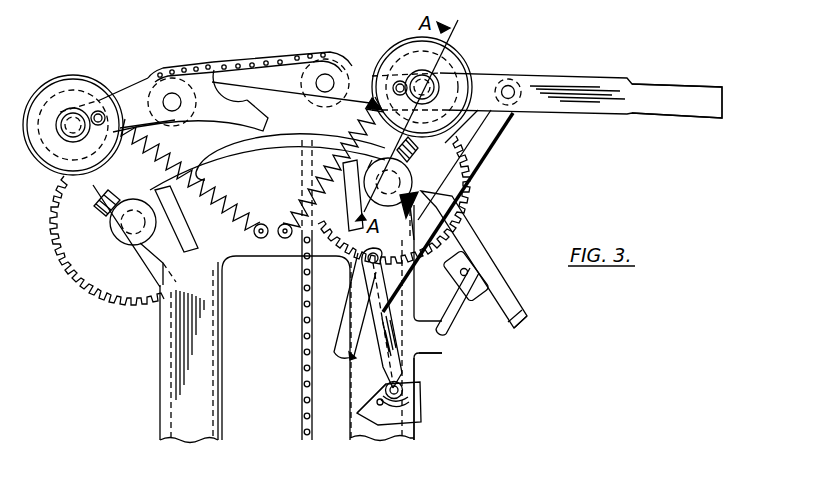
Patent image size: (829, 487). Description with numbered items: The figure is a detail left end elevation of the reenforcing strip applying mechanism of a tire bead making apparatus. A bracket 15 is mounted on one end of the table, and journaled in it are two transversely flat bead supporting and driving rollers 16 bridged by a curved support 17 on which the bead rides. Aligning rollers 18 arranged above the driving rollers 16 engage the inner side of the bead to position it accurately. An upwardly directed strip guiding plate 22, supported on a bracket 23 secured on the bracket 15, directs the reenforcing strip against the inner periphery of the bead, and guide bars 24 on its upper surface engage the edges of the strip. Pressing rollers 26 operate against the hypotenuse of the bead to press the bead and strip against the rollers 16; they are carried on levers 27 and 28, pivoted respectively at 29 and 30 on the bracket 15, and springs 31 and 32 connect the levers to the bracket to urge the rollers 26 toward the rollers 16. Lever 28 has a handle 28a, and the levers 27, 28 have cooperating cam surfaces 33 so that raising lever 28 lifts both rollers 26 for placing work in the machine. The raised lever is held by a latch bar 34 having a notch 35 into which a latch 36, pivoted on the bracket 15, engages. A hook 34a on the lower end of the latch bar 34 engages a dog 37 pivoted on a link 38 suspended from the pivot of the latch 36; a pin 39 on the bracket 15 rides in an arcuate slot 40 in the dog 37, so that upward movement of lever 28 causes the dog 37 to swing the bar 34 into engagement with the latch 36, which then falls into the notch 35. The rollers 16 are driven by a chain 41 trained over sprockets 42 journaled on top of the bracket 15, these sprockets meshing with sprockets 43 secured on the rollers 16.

The bracket 15 is at (158, 418).
The bead supporting and driving rollers 16 is at (118, 234).
The curved support 17 is at (275, 156).
The aligning rollers 18 is at (96, 202).
The strip guiding plate 22 is at (506, 320).
The bracket 23 is at (447, 312).
The guide bars 24 is at (524, 315).
The pressing rollers 26 is at (58, 82).
The lever 27 is at (132, 100).
The lever 28 is at (487, 80).
The handle 28a is at (652, 90).
The pivot 29 is at (173, 93).
The pivot 30 is at (326, 74).
The spring 31 is at (212, 207).
The spring 32 is at (303, 232).
The cooperating cam surfaces 33 is at (228, 100).
The latch bar 34 is at (490, 130).
The hook 34a is at (352, 358).
The notch 35 is at (403, 283).
The latch 36 is at (362, 291).
The dog 37 is at (422, 410).
The link 38 is at (400, 367).
The pin 39 is at (380, 406).
The arcuate slot 40 is at (402, 420).
The chain 41 is at (301, 410).
The sprockets 42 is at (163, 76).
The sprockets 43 is at (98, 285).